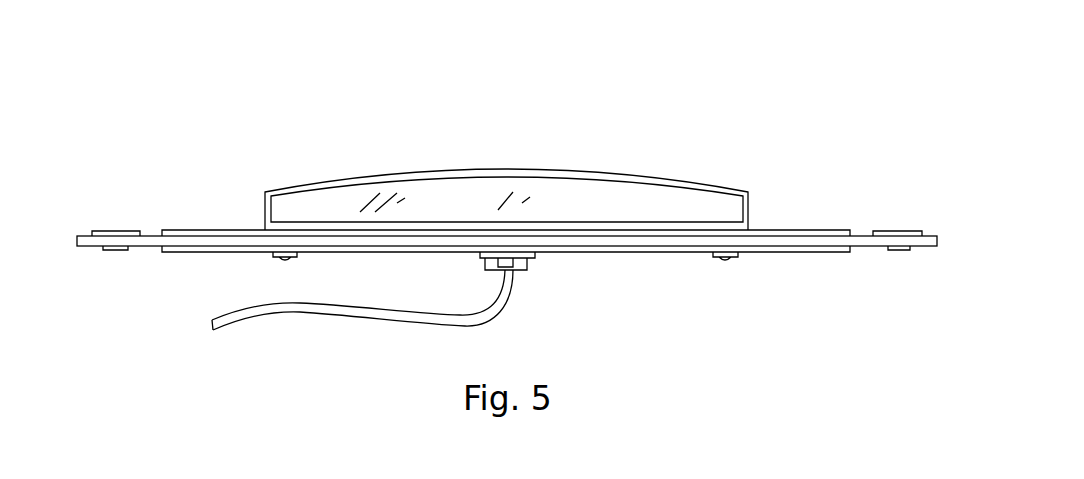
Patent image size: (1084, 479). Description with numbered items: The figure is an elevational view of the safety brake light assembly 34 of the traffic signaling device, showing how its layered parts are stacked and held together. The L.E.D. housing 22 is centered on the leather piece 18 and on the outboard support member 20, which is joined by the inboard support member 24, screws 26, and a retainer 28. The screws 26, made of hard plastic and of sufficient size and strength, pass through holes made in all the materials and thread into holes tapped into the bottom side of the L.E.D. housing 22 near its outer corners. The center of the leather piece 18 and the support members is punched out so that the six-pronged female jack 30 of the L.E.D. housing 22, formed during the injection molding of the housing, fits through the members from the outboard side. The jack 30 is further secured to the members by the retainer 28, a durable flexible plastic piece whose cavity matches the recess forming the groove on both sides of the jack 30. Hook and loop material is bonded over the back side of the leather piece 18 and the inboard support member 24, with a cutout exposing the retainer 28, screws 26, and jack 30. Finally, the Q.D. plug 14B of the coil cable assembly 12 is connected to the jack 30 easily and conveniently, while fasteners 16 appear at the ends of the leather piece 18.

The safety brake light assembly 34 is at (643, 81).
The leather piece 18 is at (860, 240).
The outboard support member 20 is at (782, 233).
The inboard support member 24 is at (807, 250).
The fasteners 16 is at (115, 232).
The L.E.D. housing 22 is at (518, 173).
The screws 26 is at (277, 257).
The retainer 28 is at (533, 257).
The six-pronged female jack 30 is at (485, 260).
The Q.D. plug 14B is at (515, 265).
The coil cable assembly 12 is at (315, 315).